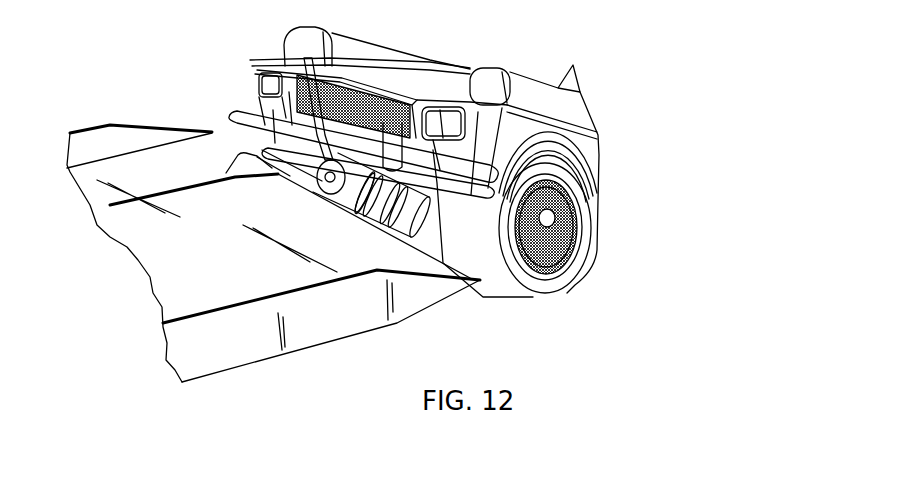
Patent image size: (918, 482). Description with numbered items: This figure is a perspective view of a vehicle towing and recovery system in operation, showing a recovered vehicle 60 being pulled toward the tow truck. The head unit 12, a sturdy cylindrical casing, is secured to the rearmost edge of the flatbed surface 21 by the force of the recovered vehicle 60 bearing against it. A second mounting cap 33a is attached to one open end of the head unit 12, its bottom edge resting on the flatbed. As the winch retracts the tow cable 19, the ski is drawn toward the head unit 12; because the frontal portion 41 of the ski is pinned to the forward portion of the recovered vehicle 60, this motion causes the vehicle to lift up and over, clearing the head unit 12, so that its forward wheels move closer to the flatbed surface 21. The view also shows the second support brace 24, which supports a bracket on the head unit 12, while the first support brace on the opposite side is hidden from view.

The head unit 12 is at (243, 153).
The tow cable 19 is at (187, 187).
The flatbed surface 21 is at (233, 285).
The second support brace 24 is at (318, 203).
The second mounting cap 33a is at (318, 206).
The frontal portion 41 is at (282, 66).
The recovered vehicle 60 is at (535, 92).